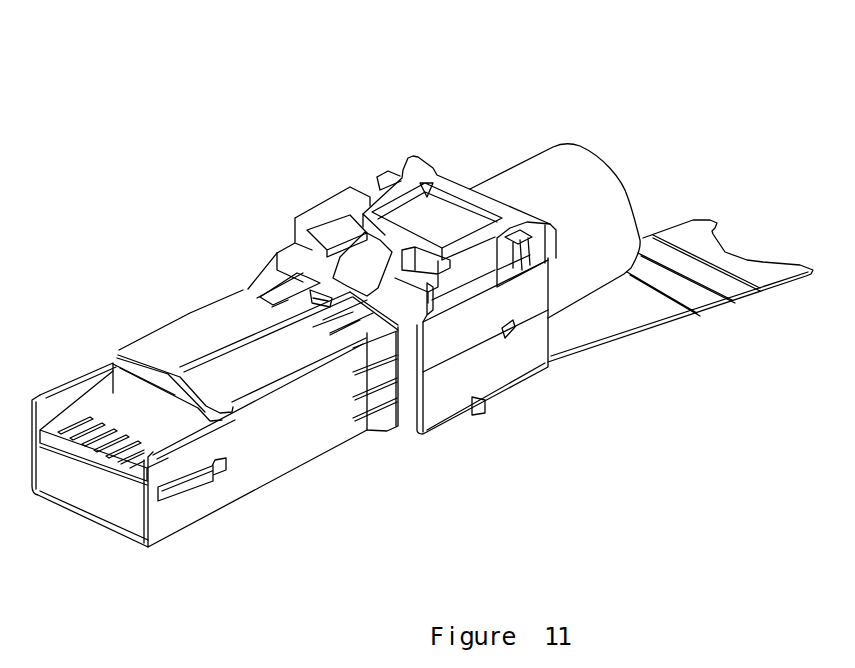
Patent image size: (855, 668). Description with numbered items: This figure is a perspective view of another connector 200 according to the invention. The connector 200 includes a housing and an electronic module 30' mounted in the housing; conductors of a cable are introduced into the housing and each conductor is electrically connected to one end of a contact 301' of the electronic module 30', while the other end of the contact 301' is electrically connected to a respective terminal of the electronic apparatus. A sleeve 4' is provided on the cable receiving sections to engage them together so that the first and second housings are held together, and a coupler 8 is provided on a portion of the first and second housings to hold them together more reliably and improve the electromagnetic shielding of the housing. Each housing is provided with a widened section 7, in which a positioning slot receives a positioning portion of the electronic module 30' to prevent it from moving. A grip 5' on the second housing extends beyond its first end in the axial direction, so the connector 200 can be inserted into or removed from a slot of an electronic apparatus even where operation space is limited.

The connector 200 is at (233, 241).
The electronic module 30' is at (215, 421).
The contact 301' is at (101, 508).
The coupler 8 is at (203, 333).
The widened section 7 is at (505, 362).
The sleeve 4' is at (555, 173).
The grip 5' is at (680, 240).